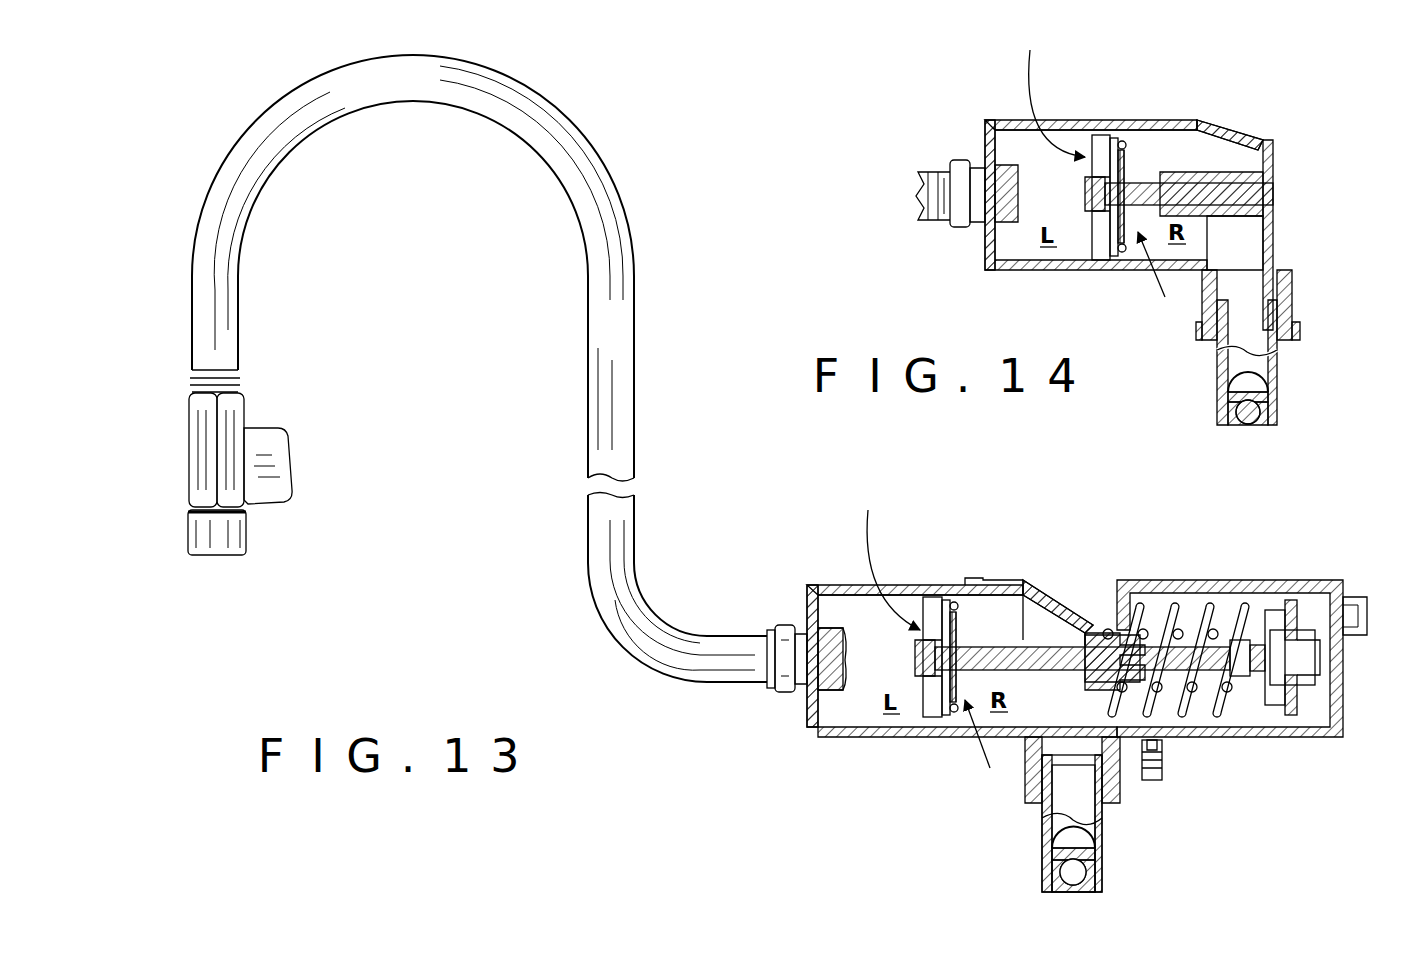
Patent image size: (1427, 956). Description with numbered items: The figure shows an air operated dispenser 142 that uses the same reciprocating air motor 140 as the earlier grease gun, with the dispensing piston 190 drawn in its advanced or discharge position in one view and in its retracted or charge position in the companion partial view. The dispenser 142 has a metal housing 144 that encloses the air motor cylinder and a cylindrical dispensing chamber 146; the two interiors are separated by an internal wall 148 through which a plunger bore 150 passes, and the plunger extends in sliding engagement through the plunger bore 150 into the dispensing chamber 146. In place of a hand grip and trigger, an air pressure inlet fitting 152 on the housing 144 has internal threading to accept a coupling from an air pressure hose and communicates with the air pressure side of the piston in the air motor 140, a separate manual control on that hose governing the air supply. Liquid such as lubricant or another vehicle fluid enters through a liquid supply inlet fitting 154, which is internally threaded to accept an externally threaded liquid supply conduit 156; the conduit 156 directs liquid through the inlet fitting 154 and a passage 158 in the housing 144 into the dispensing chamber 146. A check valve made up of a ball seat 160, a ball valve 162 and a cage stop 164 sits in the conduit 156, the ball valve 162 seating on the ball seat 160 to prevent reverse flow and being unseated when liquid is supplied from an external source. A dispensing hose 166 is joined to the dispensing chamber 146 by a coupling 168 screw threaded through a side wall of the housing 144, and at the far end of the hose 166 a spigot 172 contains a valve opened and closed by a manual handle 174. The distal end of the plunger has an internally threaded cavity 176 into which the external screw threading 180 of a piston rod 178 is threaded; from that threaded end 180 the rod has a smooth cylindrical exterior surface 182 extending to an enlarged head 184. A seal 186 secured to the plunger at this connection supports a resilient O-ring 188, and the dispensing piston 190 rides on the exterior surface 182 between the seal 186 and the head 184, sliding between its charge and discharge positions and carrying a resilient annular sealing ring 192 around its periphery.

In FIG. 13, the reciprocating air motor 140 is at (1293, 575).
In FIG. 13, the dispenser 142 is at (1040, 548).
In FIG. 14, the dispenser 142 is at (1237, 118).
In FIG. 13, the housing 144 is at (823, 590).
In FIG. 14, the housing 144 is at (985, 125).
In FIG. 13, the dispensing chamber 146 is at (847, 598).
In FIG. 14, the dispensing chamber 146 is at (1010, 128).
In FIG. 13, the internal wall 148 is at (1060, 625).
In FIG. 14, the internal wall 148 is at (1260, 145).
In FIG. 13, the plunger bore 150 is at (1100, 630).
In FIG. 14, the plunger bore 150 is at (1270, 220).
In FIG. 13, the air pressure inlet fitting 152 is at (1345, 590).
In FIG. 13, the liquid supply inlet fitting 154 is at (1123, 795).
In FIG. 13, the liquid supply conduit 156 is at (1097, 857).
In FIG. 14, the liquid supply conduit 156 is at (1278, 380).
In FIG. 13, the passage 158 is at (1065, 800).
In FIG. 14, the passage 158 is at (1258, 283).
In FIG. 13, the ball seat 160 is at (1100, 855).
In FIG. 14, the ball seat 160 is at (1225, 418).
In FIG. 13, the ball valve 162 is at (1048, 882).
In FIG. 14, the ball valve 162 is at (1258, 405).
In FIG. 13, the cage stop 164 is at (1045, 830).
In FIG. 14, the cage stop 164 is at (1265, 365).
In FIG. 13, the dispensing hose 166 is at (619, 397).
In FIG. 14, the dispensing hose 166 is at (935, 182).
In FIG. 13, the coupling 168 is at (803, 673).
In FIG. 14, the coupling 168 is at (977, 215).
In FIG. 13, the spigot 172 is at (220, 533).
In FIG. 13, the manual handle 174 is at (277, 474).
In FIG. 13, the cavity 176 is at (978, 650).
In FIG. 14, the cavity 176 is at (1155, 195).
In FIG. 13, the piston rod 178 is at (940, 710).
In FIG. 14, the piston rod 178 is at (1112, 240).
In FIG. 13, the external screw threading 180 is at (1007, 657).
In FIG. 14, the external screw threading 180 is at (1190, 190).
In FIG. 13, the cylindrical exterior surface 182 is at (935, 710).
In FIG. 14, the cylindrical exterior surface 182 is at (1108, 175).
In FIG. 13, the enlarged head 184 is at (912, 657).
In FIG. 14, the enlarged head 184 is at (1090, 200).
In FIG. 13, the seal 186 is at (987, 746).
In FIG. 14, the seal 186 is at (1161, 277).
In FIG. 13, the O-ring 188 is at (950, 600).
In FIG. 14, the O-ring 188 is at (1120, 150).
In FIG. 13, the dispensing piston 190 is at (881, 557).
In FIG. 14, the dispensing piston 190 is at (1046, 91).
In FIG. 13, the sealing ring 192 is at (945, 600).
In FIG. 14, the sealing ring 192 is at (1110, 250).